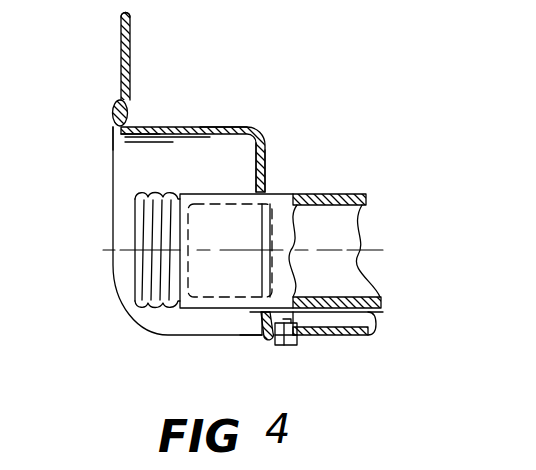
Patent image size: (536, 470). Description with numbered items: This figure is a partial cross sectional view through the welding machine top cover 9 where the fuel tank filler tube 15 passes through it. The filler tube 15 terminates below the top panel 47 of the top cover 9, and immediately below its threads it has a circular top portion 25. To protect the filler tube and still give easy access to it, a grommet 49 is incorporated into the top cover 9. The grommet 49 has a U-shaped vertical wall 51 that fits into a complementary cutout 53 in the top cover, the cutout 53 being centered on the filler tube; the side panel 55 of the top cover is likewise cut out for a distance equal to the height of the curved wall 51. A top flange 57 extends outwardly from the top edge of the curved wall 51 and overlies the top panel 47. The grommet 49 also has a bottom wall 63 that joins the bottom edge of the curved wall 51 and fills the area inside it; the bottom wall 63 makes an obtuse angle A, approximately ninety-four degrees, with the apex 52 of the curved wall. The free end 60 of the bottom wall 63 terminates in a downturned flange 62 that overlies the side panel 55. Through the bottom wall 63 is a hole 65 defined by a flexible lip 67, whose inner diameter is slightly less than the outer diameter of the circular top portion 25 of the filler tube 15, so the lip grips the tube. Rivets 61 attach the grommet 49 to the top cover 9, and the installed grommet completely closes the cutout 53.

The welding machine top cover 9 is at (118, 46).
The top panel 47 is at (121, 28).
The top flange 57 is at (113, 106).
The cutout 53 is at (119, 137).
The U-shaped vertical wall 51 is at (183, 127).
The apex 52 is at (141, 128).
The grommet 49 is at (227, 124).
The bottom wall 63 is at (266, 150).
The obtuse angle A is at (248, 179).
The circular top portion 25 is at (200, 288).
The flexible lip 67 is at (255, 192).
The hole 65 is at (258, 205).
The filler tube 15 is at (381, 318).
The side panel 55 is at (338, 336).
The downturned flange 62 is at (268, 340).
The rivets 61 is at (286, 346).
The free end 60 is at (261, 320).